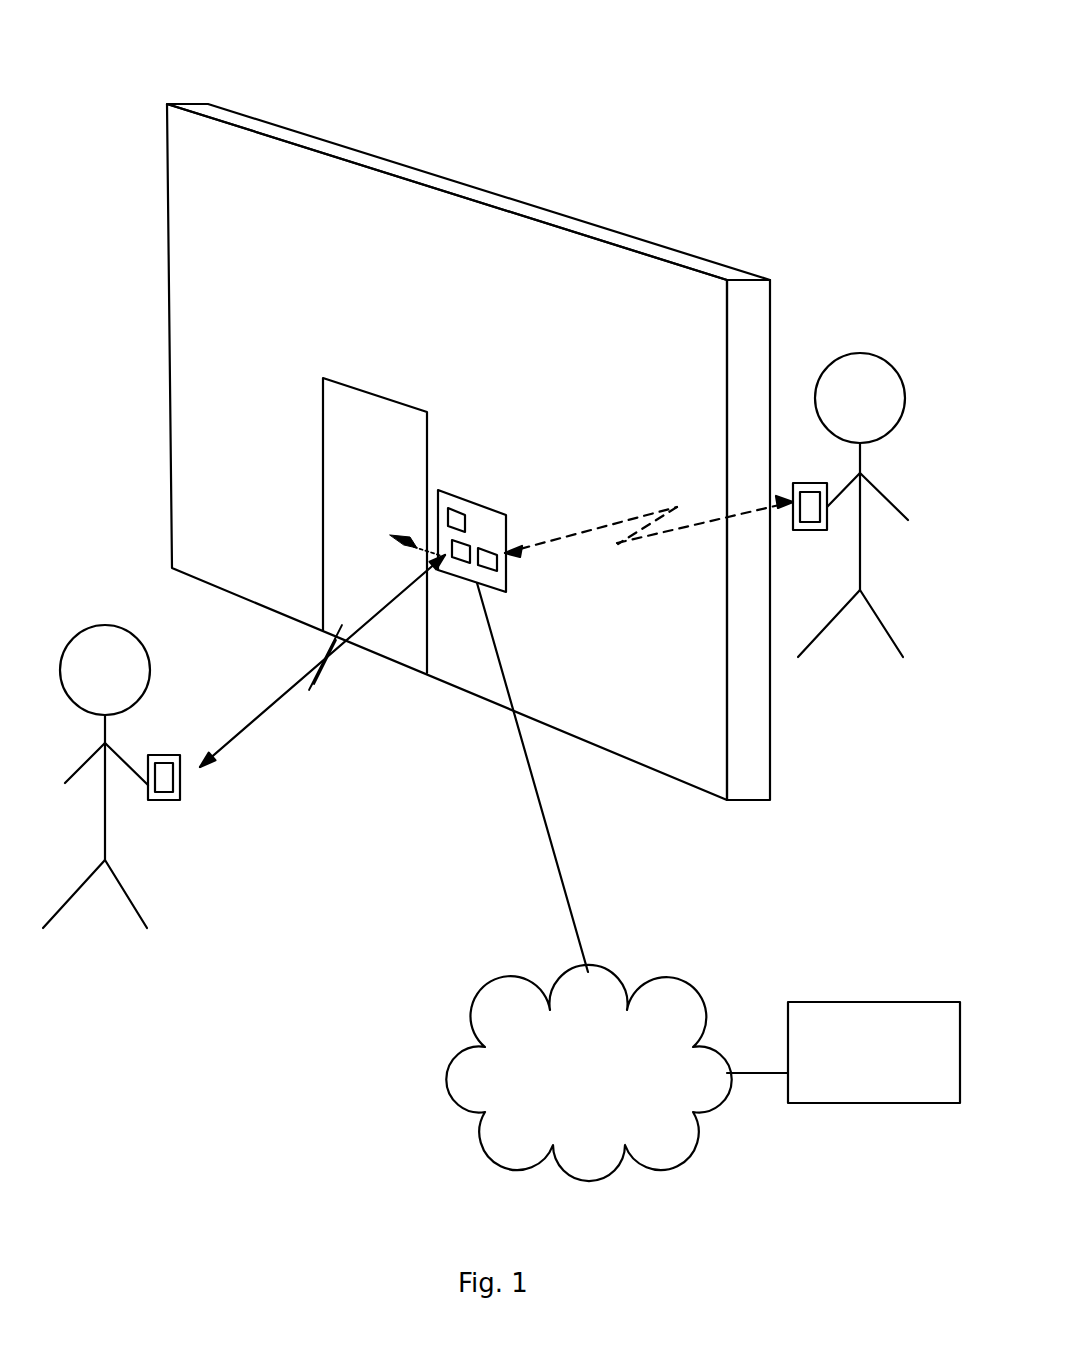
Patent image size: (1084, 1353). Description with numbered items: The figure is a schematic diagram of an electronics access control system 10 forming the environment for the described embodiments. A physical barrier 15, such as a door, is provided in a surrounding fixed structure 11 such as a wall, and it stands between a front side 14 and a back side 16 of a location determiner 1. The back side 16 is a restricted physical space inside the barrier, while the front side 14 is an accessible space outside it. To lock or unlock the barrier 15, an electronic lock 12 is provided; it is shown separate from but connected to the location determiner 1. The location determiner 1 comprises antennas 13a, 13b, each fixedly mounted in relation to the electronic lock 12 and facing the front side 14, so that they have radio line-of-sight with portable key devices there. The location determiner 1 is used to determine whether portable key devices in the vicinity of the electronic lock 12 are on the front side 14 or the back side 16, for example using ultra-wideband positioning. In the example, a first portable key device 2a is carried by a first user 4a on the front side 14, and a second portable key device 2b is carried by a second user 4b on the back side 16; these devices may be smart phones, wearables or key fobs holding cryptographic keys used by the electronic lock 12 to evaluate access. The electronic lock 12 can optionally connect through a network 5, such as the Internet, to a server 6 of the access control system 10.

The location determiner 1 is at (462, 491).
The first portable key device 2a is at (182, 794).
The second portable key device 2b is at (808, 483).
The first user 4a is at (85, 627).
The second user 4b is at (892, 360).
The network 5 is at (597, 1092).
The server 6 is at (877, 1002).
The electronics access control system 10 is at (744, 98).
The surrounding fixed structure 11 is at (252, 420).
The electronic lock 12 is at (465, 532).
The antenna 13a is at (460, 563).
The antenna 13b is at (492, 572).
The front side 14 is at (108, 400).
The physical barrier 15 is at (352, 482).
The back side 16 is at (870, 200).